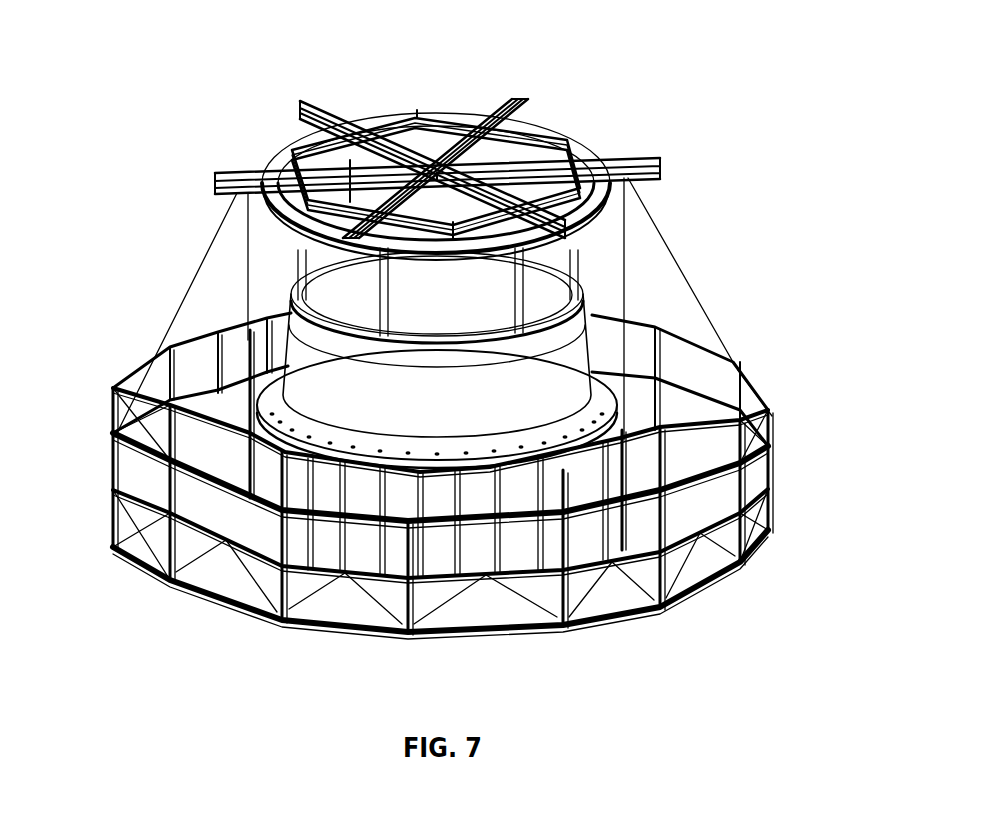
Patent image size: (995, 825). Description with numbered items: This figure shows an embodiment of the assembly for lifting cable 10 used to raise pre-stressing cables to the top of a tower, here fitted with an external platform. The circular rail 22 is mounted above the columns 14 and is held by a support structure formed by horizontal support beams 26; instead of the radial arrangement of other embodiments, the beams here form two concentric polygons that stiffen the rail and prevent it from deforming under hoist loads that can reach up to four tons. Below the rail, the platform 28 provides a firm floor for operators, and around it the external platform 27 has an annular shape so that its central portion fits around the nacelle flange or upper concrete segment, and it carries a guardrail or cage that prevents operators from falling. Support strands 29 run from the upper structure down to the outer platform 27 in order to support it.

The assembly for lifting cable 10 is at (640, 100).
The columns 14 is at (572, 280).
The rail 22 is at (612, 217).
The horizontal support beams 26 is at (300, 118).
The external platform 27 is at (113, 470).
The platform 28 is at (680, 567).
The support strands 29 is at (178, 303).